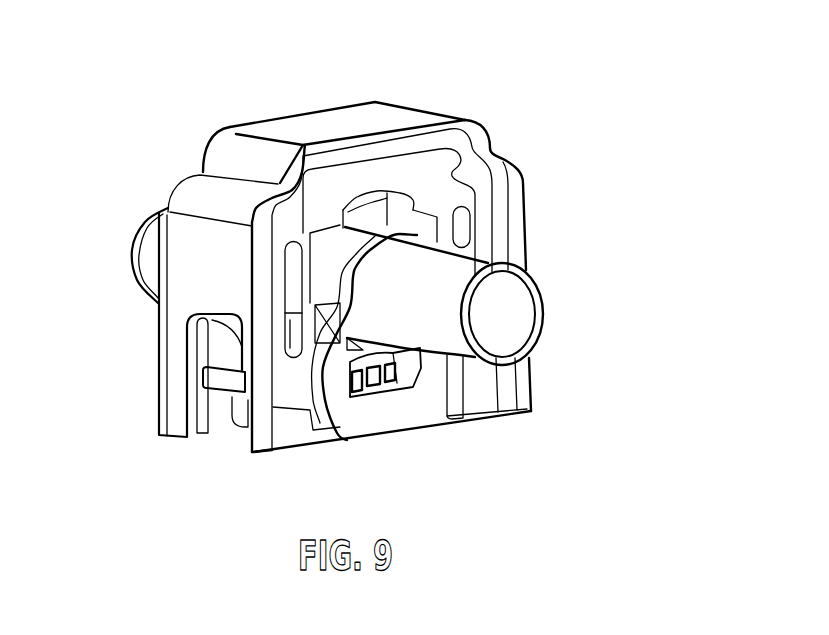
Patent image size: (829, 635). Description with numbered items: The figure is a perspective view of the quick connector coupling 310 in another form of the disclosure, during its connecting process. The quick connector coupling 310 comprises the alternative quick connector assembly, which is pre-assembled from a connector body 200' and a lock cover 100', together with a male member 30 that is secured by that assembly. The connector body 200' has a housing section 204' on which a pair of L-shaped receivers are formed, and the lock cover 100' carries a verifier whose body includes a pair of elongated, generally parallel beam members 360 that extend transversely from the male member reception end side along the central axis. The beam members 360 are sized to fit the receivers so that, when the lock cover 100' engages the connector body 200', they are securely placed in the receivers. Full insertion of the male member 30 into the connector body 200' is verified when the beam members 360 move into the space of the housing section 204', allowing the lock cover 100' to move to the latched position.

The quick connector coupling 310 is at (286, 70).
The lock cover 100' is at (401, 244).
The beam members 360 is at (323, 307).
The male member 30 is at (540, 287).
The connector body 200' is at (398, 403).
The housing section 204' is at (385, 430).